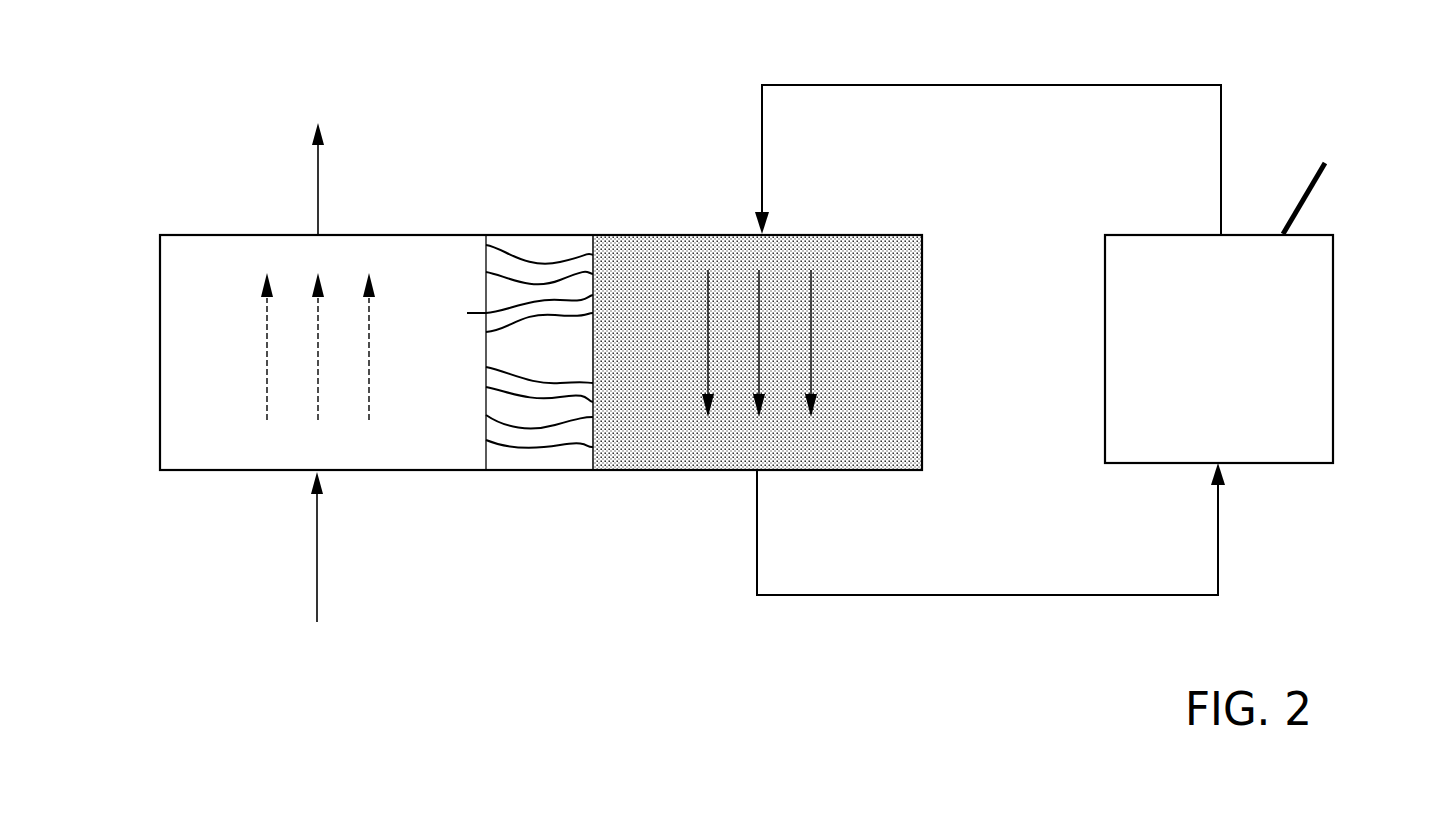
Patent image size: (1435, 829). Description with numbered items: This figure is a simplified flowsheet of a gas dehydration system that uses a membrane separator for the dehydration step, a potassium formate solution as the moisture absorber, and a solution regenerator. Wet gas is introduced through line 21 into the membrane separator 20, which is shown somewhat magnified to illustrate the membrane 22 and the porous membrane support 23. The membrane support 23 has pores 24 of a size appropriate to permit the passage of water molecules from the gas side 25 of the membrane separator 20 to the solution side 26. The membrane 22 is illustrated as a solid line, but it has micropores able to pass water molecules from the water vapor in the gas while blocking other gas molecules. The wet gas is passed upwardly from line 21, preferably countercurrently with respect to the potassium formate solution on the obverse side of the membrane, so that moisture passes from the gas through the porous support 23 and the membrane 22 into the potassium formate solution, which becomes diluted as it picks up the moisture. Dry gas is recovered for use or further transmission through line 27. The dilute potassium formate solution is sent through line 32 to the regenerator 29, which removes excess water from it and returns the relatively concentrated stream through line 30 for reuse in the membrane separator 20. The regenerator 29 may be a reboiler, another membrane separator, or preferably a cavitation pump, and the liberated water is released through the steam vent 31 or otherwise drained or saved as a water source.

The membrane separator 20 is at (157, 250).
The line 21 is at (308, 570).
The membrane 22 is at (595, 277).
The porous membrane support 23 is at (528, 245).
The pores 24 is at (497, 426).
The gas side 25 is at (243, 260).
The solution side 26 is at (877, 262).
The line 27 is at (320, 192).
The regenerator 29 is at (1333, 393).
The line 30 is at (945, 85).
The steam vent 31 is at (1308, 198).
The line 32 is at (950, 595).